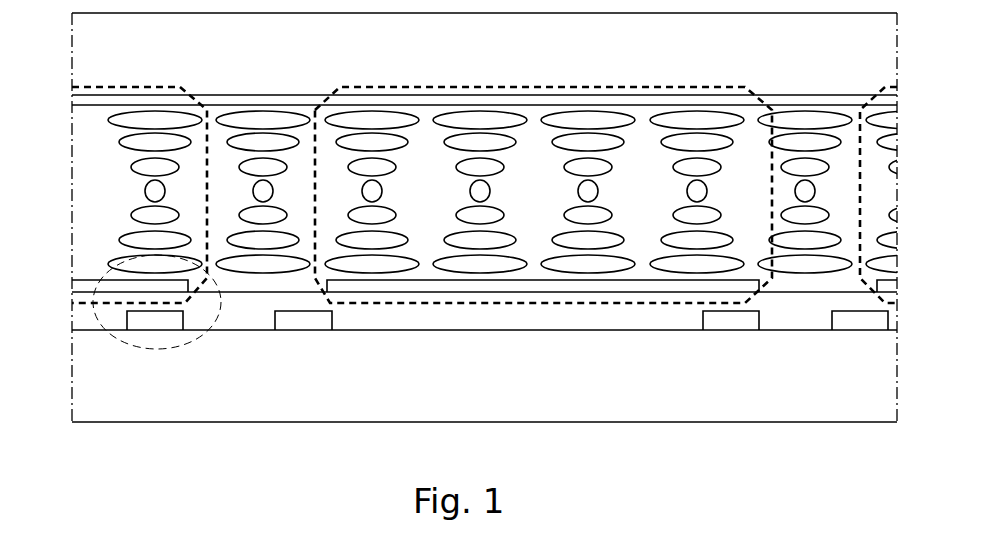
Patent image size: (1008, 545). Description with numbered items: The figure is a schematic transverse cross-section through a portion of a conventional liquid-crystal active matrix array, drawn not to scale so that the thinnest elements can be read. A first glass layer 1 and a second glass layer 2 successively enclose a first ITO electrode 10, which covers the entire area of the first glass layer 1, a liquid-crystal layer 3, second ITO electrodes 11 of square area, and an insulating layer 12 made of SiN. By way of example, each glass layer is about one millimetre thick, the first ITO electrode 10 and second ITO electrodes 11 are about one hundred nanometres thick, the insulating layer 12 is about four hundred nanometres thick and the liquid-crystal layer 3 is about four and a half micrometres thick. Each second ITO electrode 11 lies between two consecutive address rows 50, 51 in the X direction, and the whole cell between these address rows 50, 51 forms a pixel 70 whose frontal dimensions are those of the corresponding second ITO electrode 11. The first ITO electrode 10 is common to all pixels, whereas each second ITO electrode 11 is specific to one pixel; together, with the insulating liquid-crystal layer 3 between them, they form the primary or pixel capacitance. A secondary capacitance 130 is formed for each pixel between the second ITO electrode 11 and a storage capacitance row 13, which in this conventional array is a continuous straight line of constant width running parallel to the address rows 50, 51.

The first glass layer 1 is at (80, 48).
The second glass layer 2 is at (78, 384).
The liquid-crystal layer 3 is at (80, 171).
The first ITO electrode 10 is at (80, 98).
The second ITO electrode 11 is at (80, 284).
The insulating layer 12 is at (78, 322).
The storage capacitance row 13 is at (170, 322).
The address row 50 is at (300, 322).
The address row 51 is at (853, 322).
The pixel 70 is at (478, 305).
The secondary capacitance 130 is at (195, 338).